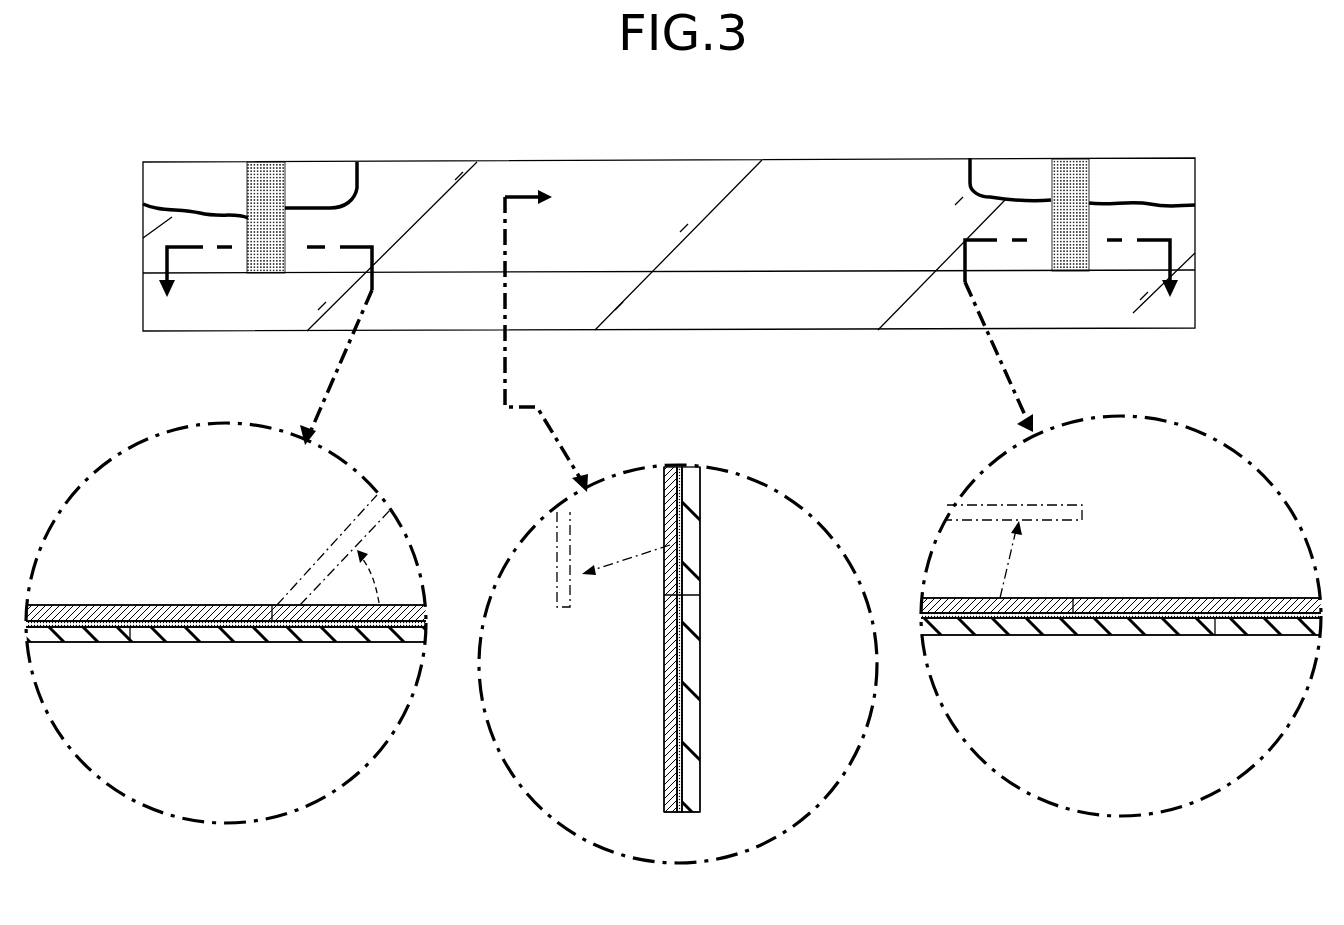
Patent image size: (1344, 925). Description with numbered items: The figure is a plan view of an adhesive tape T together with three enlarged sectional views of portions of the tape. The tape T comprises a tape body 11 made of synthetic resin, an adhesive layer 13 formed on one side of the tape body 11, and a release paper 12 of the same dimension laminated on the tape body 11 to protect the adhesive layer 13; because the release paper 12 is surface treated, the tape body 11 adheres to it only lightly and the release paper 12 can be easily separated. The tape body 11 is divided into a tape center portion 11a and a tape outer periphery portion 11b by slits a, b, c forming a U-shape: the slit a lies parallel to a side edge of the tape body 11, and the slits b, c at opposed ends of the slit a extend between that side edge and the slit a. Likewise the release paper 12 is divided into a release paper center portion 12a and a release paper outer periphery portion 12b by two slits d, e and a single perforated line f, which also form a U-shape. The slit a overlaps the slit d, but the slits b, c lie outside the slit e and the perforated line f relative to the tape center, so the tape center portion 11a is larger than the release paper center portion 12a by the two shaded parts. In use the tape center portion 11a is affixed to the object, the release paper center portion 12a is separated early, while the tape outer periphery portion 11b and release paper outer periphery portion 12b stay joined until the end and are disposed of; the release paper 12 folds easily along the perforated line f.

The adhesive tape T is at (450, 356).
The tape body 11 is at (671, 154).
The tape center portion 11a is at (590, 177).
The tape outer periphery portion 11b is at (730, 316).
The release paper 12 is at (1167, 153).
The release paper center portion 12a is at (327, 177).
The release paper outer periphery portion 12b is at (178, 168).
The adhesive layer 13 is at (240, 621).
The slit a is at (575, 273).
The slit b is at (1090, 255).
The slit c is at (247, 262).
The slit d is at (697, 272).
The slit e is at (1051, 175).
The perforated line f is at (286, 182).